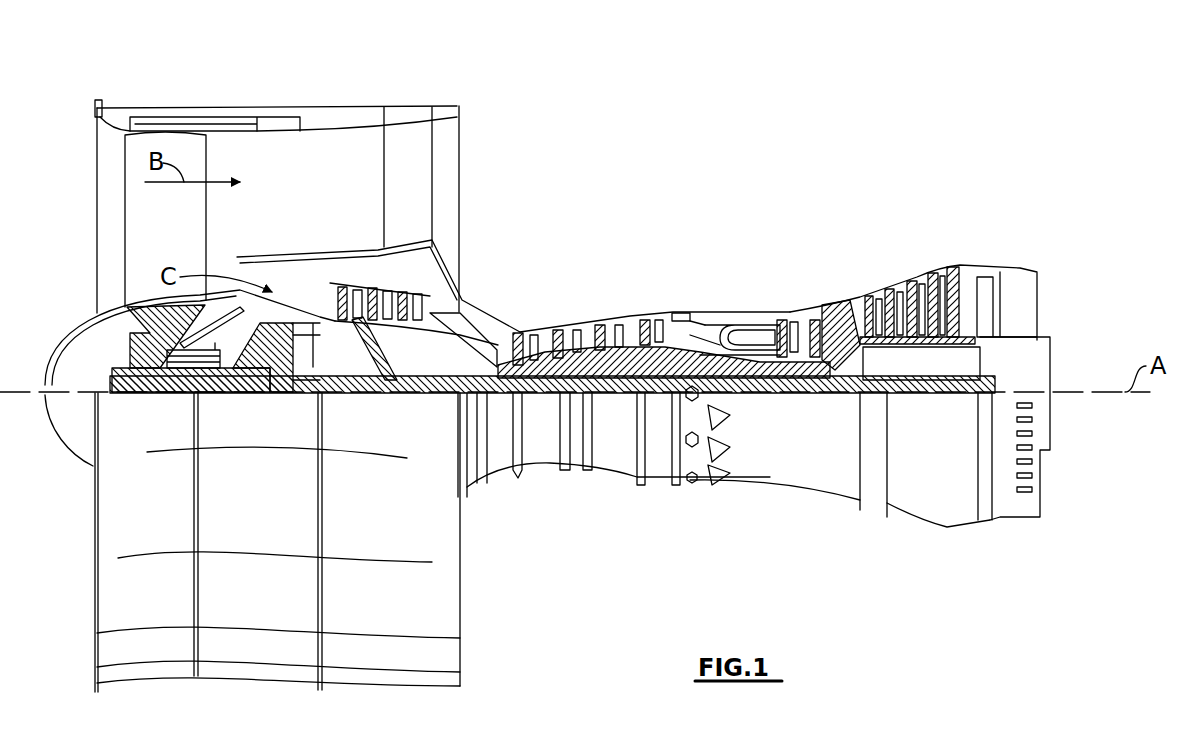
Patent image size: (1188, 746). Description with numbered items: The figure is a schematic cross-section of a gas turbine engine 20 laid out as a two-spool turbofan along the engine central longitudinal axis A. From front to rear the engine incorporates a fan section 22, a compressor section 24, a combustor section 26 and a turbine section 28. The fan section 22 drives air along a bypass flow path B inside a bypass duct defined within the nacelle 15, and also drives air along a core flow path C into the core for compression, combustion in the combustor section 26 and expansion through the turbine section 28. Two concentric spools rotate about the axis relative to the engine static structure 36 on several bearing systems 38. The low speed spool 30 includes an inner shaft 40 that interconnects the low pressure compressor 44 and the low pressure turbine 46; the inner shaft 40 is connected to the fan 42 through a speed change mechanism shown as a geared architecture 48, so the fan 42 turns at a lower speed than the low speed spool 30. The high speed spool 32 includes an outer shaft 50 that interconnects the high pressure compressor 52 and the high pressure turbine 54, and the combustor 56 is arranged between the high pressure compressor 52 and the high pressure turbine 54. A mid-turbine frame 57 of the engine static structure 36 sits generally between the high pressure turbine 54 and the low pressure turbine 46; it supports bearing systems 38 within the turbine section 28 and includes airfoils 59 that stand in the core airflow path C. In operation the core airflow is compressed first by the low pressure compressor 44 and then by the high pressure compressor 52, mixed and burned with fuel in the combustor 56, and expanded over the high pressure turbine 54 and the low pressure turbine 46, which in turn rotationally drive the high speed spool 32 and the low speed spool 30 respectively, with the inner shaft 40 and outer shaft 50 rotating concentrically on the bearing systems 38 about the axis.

The nacelle 15 is at (278, 108).
The gas turbine engine 20 is at (740, 155).
The fan section 22 is at (205, 102).
The compressor section 24 is at (508, 300).
The combustor section 26 is at (732, 290).
The turbine section 28 is at (878, 250).
The low speed spool 30 is at (613, 398).
The high speed spool 32 is at (653, 357).
The engine static structure 36 is at (656, 482).
The bearing systems 38 is at (412, 380).
The inner shaft 40 is at (477, 395).
The fan 42 is at (182, 236).
The low pressure compressor 44 is at (373, 303).
The low pressure turbine 46 is at (925, 290).
The geared architecture 48 is at (287, 376).
The outer shaft 50 is at (745, 380).
The high pressure compressor 52 is at (596, 323).
The high pressure turbine 54 is at (797, 313).
The combustor 56 is at (734, 337).
The mid-turbine frame 57 is at (842, 298).
The airfoils 59 is at (848, 330).